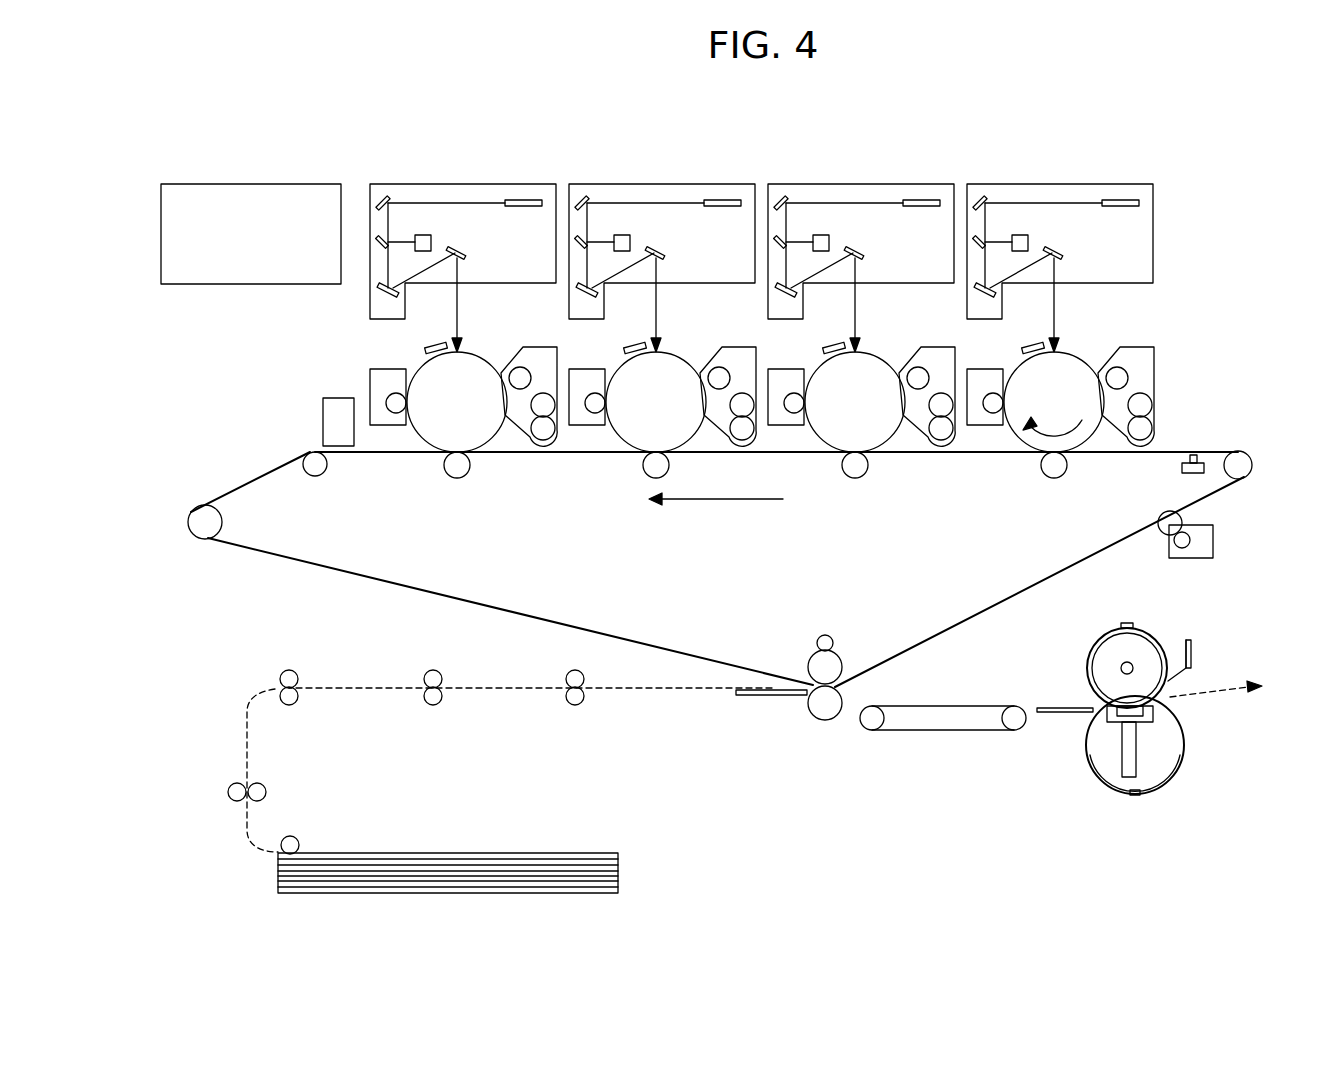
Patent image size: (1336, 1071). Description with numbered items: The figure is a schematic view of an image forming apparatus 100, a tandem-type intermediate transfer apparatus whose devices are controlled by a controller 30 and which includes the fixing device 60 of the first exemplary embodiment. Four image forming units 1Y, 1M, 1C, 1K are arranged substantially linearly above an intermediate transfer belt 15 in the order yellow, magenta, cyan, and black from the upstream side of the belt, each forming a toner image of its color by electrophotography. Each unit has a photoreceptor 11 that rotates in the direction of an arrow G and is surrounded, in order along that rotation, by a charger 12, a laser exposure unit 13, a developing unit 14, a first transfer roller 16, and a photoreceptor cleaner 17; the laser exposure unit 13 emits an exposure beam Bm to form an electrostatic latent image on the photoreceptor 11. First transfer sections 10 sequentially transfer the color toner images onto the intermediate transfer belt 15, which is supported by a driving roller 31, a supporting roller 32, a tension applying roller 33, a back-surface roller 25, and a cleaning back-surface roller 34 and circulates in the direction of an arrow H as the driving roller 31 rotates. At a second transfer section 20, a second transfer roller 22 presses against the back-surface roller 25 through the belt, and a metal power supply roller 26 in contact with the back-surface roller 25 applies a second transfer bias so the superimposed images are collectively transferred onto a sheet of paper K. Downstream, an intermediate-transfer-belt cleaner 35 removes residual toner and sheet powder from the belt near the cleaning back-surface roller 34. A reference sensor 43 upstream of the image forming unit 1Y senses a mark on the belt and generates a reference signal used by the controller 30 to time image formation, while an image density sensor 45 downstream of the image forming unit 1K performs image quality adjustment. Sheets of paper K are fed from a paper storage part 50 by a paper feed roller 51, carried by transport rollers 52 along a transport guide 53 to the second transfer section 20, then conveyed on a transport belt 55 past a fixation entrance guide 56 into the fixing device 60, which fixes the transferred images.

The image forming apparatus 100 is at (1234, 182).
The controller 30 is at (254, 183).
The black unit 1K is at (457, 157).
The cyan unit 1C is at (656, 157).
The magenta unit 1M is at (854, 157).
The yellow unit 1Y is at (1091, 314).
The photoreceptor 11 is at (1080, 372).
The charger 12 is at (1028, 345).
The laser exposure unit 13 is at (1141, 232).
The developing unit 14 is at (1147, 373).
The first transfer roller 16 is at (1053, 478).
The photoreceptor cleaner 17 is at (982, 417).
The exposure beam Bm is at (1055, 310).
The arrow G is at (1052, 416).
The first transfer section 10 is at (1025, 492).
The intermediate transfer belt 15 is at (620, 636).
The arrow H is at (716, 512).
The second transfer section 20 is at (857, 688).
The second transfer roller 22 is at (825, 716).
The back-surface roller 25 is at (832, 664).
The power supply roller 26 is at (823, 636).
The driving roller 31 is at (1253, 465).
The supporting roller 32 is at (317, 468).
The tension applying roller 33 is at (215, 525).
The cleaning back-surface roller 34 is at (1160, 522).
The intermediate-transfer-belt cleaner 35 is at (1213, 540).
The reference sensor 43 is at (1193, 474).
The image density sensor 45 is at (322, 412).
The paper storage part 50 is at (619, 862).
The paper feed roller 51 is at (292, 838).
The transport roller 52 is at (280, 680).
The transport guide 53 is at (745, 697).
The transport belt 55 is at (940, 733).
The fixation entrance guide 56 is at (1054, 713).
The fixing device 60 is at (1226, 645).
The sheet of paper K is at (455, 852).